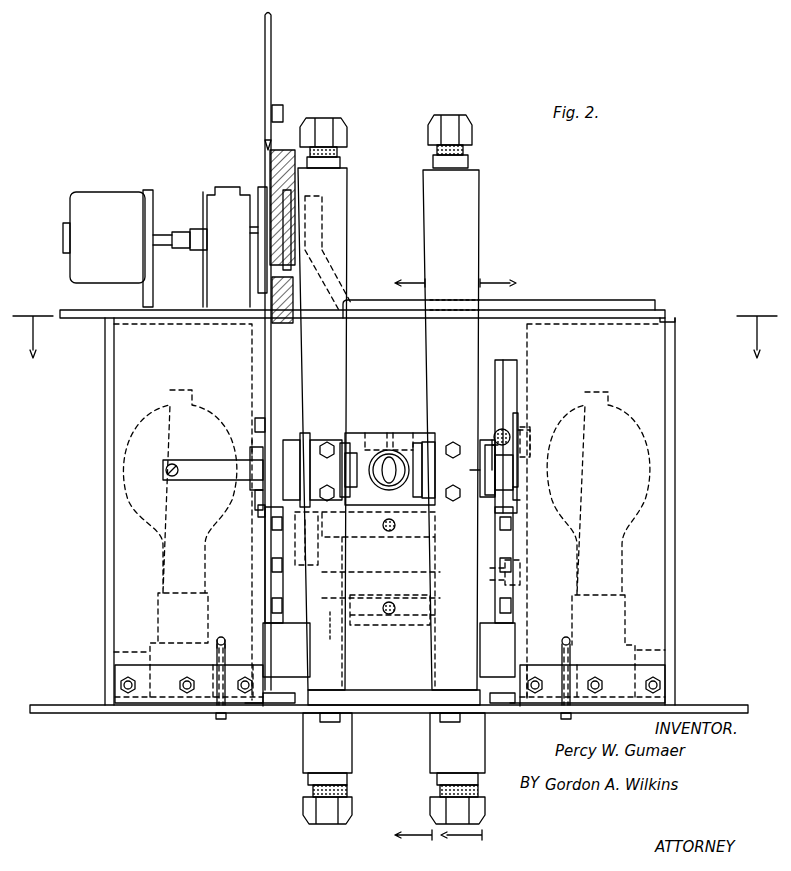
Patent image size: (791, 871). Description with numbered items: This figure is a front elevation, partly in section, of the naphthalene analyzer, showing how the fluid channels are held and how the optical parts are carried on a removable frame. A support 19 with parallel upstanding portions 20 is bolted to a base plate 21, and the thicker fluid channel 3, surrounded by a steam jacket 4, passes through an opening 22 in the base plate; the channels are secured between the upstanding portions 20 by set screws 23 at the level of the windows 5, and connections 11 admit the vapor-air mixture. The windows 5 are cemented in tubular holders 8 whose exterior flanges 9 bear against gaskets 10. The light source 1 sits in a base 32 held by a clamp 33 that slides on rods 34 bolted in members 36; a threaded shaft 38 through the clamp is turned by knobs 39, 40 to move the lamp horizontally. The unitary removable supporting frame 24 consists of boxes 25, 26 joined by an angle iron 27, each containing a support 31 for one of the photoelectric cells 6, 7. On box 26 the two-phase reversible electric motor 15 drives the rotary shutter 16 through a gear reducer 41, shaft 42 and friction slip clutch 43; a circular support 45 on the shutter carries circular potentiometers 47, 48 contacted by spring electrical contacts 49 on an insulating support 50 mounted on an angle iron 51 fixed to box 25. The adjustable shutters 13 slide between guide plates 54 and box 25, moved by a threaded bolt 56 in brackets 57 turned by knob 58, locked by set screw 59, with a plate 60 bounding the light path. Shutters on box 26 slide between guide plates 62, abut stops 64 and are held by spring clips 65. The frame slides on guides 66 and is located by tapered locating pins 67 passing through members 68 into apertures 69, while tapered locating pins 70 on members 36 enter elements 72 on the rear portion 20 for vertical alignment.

The source of ultraviolet light 1 is at (380, 440).
The fluid channel 3 is at (393, 337).
The steam jacket 4 is at (345, 185).
The window 5 is at (478, 562).
The photoelectric cell 6 is at (150, 425).
The photoelectric cell 7 is at (637, 428).
The tubular holder 8 is at (297, 445).
The exterior flange 9 is at (358, 450).
The gasket 10 is at (346, 440).
The connection 11 is at (328, 120).
The adjustable shutter 13 is at (520, 477).
The two-phase reversible electric motor 15 is at (108, 202).
The rotary shutter 16 is at (265, 40).
The support 19 is at (400, 700).
The upstanding portion 20 is at (306, 657).
The base plate 21 is at (70, 713).
The opening 22 is at (284, 714).
The set screw 23 is at (327, 442).
The unitary removable supporting frame 24 is at (548, 300).
The box 25 is at (652, 373).
The box 26 is at (118, 372).
The angle iron 27 is at (262, 660).
The support 31 is at (125, 652).
The base 32 is at (392, 447).
The clamp 33 is at (402, 502).
The rod 34 is at (331, 645).
The member 36 is at (264, 547).
The threaded shaft 38 is at (410, 575).
The knob 39 is at (518, 592).
The knob 40 is at (522, 572).
The gear reducer 41 is at (208, 200).
The shaft 42 is at (250, 243).
The friction slip clutch 43 is at (262, 229).
The circular support 45 is at (268, 163).
The circular potentiometer 47 is at (266, 148).
The circular potentiometer 48 is at (287, 150).
The spring electrical contact 49 is at (318, 212).
The insulating support 50 is at (300, 256).
The angle iron 51 is at (355, 302).
The guide plate 54 is at (518, 418).
The threaded bolt 56 is at (502, 429).
The bracket 57 is at (507, 379).
The knob 58 is at (498, 437).
The set screw 59 is at (490, 442).
The plate 60 is at (522, 433).
The guide plate 62 is at (262, 512).
The stop 64 is at (262, 420).
The spring clip 65 is at (193, 482).
The guide 66 is at (257, 713).
The tapered locating pin 67 is at (221, 720).
The member 68 is at (163, 690).
The aperture 69 is at (206, 712).
The tapered locating pin 70 is at (258, 500).
The element 72 is at (260, 442).